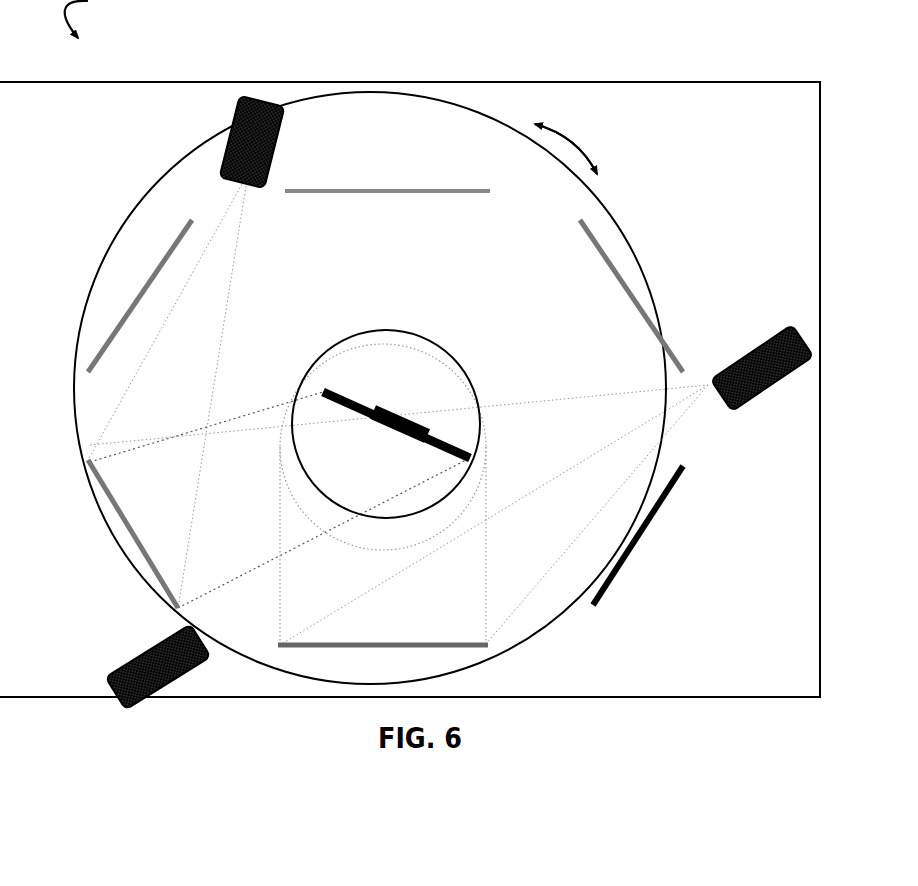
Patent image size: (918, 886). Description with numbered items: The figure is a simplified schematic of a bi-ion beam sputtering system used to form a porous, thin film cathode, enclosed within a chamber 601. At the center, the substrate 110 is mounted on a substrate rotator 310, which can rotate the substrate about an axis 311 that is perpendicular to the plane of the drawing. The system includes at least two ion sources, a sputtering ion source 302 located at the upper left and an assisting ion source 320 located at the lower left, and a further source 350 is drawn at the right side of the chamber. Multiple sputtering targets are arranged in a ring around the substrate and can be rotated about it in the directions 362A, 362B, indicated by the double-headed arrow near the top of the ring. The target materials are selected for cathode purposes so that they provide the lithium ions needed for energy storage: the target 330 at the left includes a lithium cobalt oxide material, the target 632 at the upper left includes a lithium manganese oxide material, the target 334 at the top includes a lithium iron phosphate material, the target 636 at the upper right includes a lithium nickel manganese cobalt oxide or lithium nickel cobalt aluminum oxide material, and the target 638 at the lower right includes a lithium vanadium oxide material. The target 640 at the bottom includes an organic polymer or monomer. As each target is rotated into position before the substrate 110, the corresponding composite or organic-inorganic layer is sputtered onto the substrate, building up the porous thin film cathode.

The substrate 110 is at (323, 392).
The sputtering ion source 302 is at (243, 103).
The substrate rotator 310 is at (368, 331).
The axis 311 is at (395, 400).
The assisting ion source 320 is at (199, 670).
The target 330 is at (113, 462).
The target 334 is at (447, 190).
The deposition source 350 is at (787, 379).
The direction 362A is at (594, 164).
The direction 362B is at (547, 135).
The deposition chamber 601 is at (342, 82).
The target 632 is at (170, 247).
The target 636 is at (618, 277).
The target 638 is at (627, 557).
The target 640 is at (448, 648).